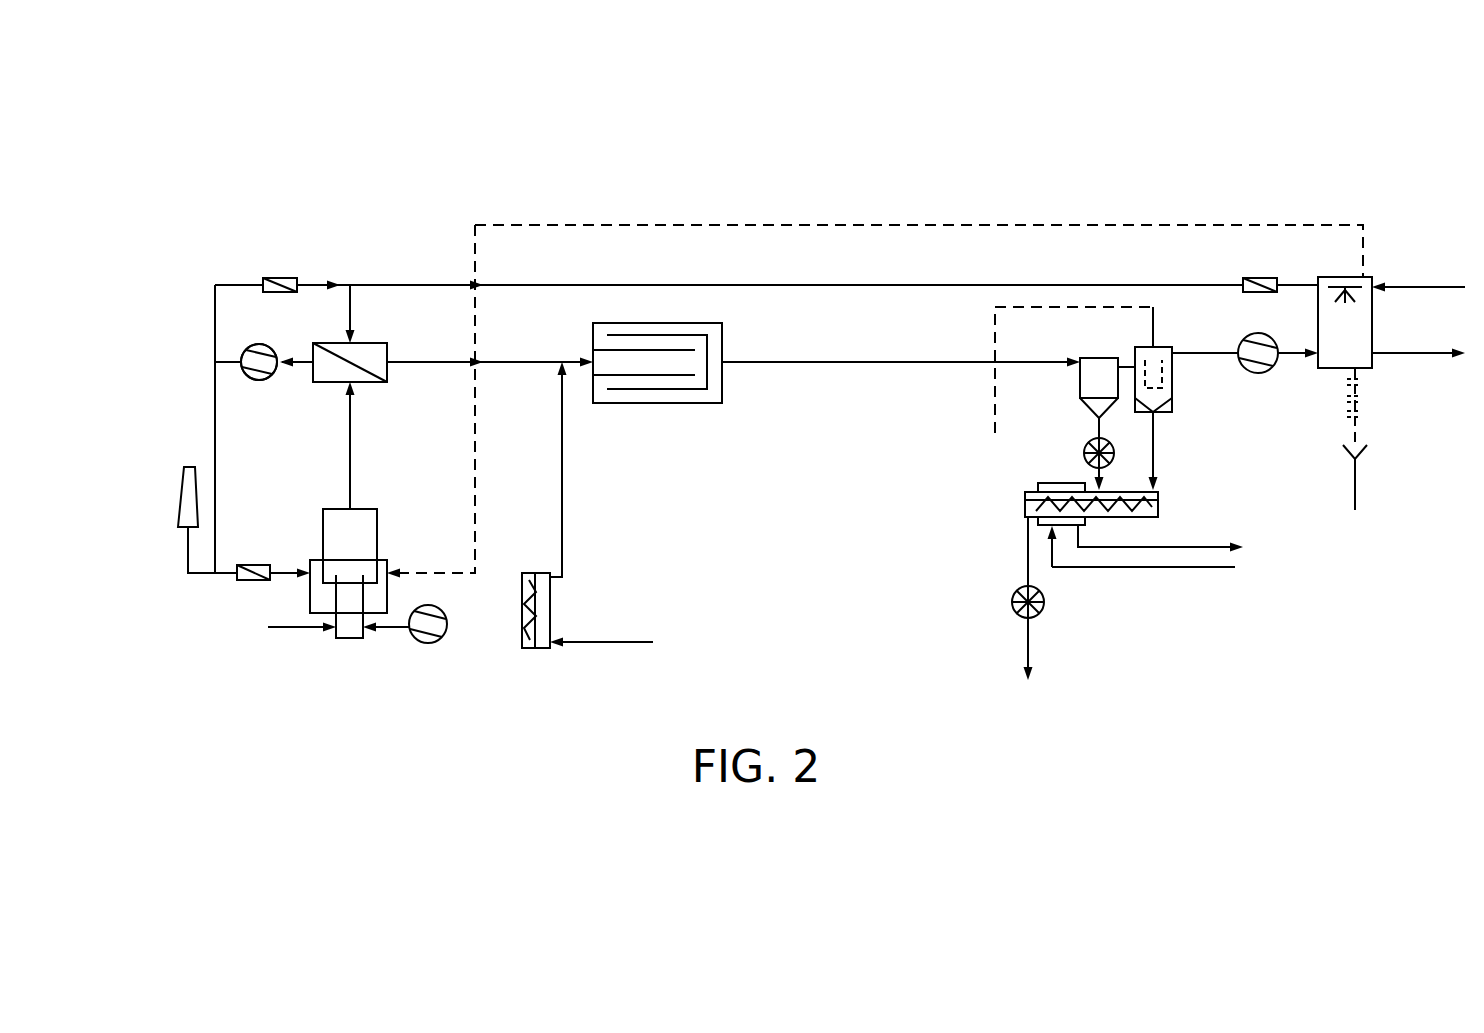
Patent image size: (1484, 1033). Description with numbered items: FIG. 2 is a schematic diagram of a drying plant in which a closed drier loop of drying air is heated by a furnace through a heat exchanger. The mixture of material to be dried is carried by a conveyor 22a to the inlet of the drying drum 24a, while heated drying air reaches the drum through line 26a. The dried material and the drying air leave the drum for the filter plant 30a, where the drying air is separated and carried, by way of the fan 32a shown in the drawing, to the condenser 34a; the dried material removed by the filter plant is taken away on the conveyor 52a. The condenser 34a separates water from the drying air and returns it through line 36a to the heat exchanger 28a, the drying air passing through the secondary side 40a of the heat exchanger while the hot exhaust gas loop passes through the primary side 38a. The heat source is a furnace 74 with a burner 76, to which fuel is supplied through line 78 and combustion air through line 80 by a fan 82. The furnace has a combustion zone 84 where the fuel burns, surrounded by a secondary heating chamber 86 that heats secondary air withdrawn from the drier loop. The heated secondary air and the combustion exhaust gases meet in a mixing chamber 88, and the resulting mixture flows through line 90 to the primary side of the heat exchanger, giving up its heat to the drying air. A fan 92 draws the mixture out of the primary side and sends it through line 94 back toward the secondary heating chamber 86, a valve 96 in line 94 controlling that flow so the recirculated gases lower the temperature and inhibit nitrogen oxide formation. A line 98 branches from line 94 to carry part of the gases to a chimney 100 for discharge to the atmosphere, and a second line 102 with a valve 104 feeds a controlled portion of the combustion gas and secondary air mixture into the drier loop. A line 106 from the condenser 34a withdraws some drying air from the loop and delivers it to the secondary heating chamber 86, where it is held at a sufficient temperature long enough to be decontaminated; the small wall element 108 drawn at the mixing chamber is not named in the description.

The conveyor 22a is at (527, 650).
The drying drum 24a is at (677, 405).
The line 26a is at (523, 360).
The heat exchanger 28a is at (388, 345).
The filter plant 30a is at (925, 556).
The pump 32a is at (1258, 374).
The condenser 34a is at (1372, 278).
The line 36a is at (860, 285).
The primary side of the heat exchanger 38a is at (323, 358).
The secondary side of the heat exchanger 40a is at (369, 343).
The conveyor 52a is at (1160, 500).
The furnace 74 is at (380, 492).
The burner 76 is at (350, 642).
The line 78 is at (282, 630).
The line 80 is at (400, 632).
The fan 82 is at (428, 644).
The combustion zone 84 is at (347, 597).
The secondary heating chamber 86 is at (385, 600).
The mixing chamber 88 is at (356, 536).
The line 90 is at (350, 422).
The fan 92 is at (262, 380).
The line 94 is at (215, 407).
The valve 96 is at (253, 565).
The line 98 is at (188, 553).
The chimney 100 is at (188, 467).
The second line 102 is at (215, 300).
The valve 104 is at (288, 277).
The line 106 is at (790, 225).
The inner vessel wall 108 is at (323, 522).